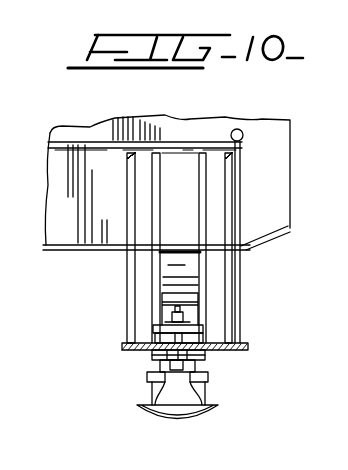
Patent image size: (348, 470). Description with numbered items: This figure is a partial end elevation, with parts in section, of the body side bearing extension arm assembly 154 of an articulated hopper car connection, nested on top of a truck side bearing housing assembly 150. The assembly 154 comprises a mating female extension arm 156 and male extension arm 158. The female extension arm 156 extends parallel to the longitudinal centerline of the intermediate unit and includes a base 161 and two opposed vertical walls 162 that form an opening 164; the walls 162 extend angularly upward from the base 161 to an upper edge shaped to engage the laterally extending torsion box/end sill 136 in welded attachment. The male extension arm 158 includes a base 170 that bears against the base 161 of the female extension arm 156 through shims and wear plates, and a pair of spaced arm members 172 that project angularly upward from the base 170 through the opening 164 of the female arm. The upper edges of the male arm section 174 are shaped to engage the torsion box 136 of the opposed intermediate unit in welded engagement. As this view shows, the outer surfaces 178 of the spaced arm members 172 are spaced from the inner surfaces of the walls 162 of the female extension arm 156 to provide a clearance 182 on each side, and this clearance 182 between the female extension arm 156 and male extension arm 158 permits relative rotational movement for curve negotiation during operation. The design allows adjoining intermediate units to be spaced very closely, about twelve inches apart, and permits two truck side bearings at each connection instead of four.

The torsion box/end sill 136 is at (58, 240).
The body side bearing extension arm assembly 154 is at (115, 229).
The opening 164 is at (118, 230).
The outer surfaces 178 is at (157, 182).
The male extension arm 158 is at (213, 226).
The male arm section 174 is at (197, 172).
The female extension arm 156 is at (248, 304).
The clearance 182 is at (281, 238).
The vertical walls 162 is at (247, 252).
The spaced arm members 172 is at (215, 265).
The base 170 is at (165, 312).
The base 161 is at (200, 362).
The truck side bearing housing assembly 150 is at (208, 381).